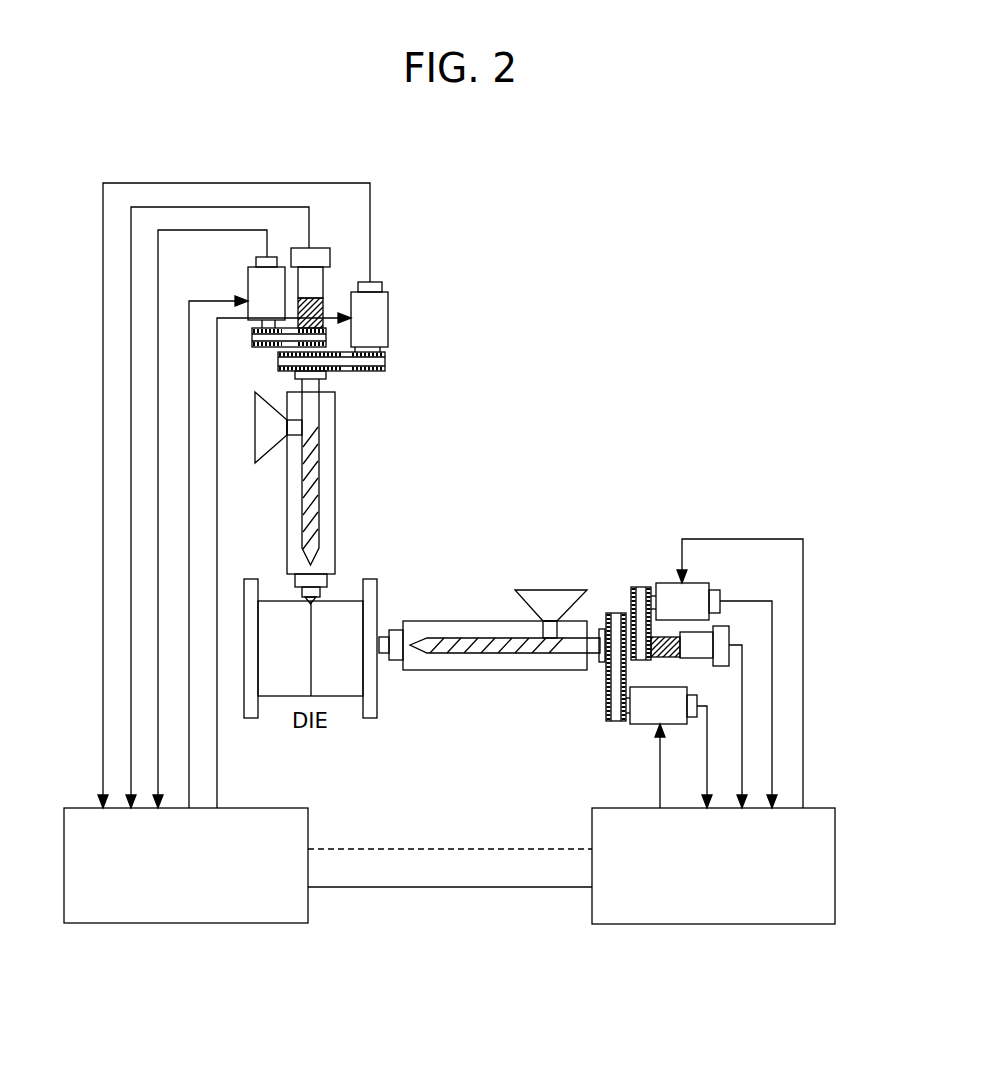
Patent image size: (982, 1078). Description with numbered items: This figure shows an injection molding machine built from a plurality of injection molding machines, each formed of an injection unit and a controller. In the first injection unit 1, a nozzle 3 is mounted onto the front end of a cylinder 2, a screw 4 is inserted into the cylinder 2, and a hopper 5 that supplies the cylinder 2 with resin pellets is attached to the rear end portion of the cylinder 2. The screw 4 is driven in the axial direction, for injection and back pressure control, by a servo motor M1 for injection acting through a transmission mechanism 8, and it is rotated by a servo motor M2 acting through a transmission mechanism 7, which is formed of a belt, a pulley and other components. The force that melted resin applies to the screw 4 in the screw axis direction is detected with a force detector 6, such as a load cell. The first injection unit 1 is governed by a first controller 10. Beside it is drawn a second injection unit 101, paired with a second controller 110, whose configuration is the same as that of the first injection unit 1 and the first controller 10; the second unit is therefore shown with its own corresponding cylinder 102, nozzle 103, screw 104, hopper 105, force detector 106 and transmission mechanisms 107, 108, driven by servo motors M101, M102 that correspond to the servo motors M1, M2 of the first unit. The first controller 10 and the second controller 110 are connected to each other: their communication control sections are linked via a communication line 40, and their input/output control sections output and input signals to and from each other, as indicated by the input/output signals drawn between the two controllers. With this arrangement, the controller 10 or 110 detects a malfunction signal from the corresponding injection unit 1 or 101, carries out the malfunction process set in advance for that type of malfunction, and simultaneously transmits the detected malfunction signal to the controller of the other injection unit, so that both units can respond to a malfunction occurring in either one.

The injection unit 1 is at (675, 528).
The cylinder 2 is at (478, 620).
The nozzle 3 is at (389, 660).
The screw 4 is at (490, 655).
The hopper 5 is at (557, 590).
The force detector 6 is at (724, 666).
The transmission mechanism 7 is at (615, 683).
The transmission mechanism 8 is at (641, 587).
The first controller 10 is at (723, 925).
The communication line 40 is at (427, 888).
The second injection unit 101 is at (409, 273).
The plasticizing barrel 102 is at (287, 548).
The plasticizing nozzle 103 is at (327, 594).
The plasticizing screw 104 is at (305, 456).
The material hopper 105 is at (255, 450).
The ball screw 106 is at (325, 248).
The gear 107 is at (347, 363).
The gear 108 is at (253, 340).
The second controller 110 is at (205, 925).
The servo motor for injection M1 is at (688, 601).
The servo motor for screw rotation M2 is at (663, 705).
The motor M101 is at (252, 291).
The motor M102 is at (388, 322).